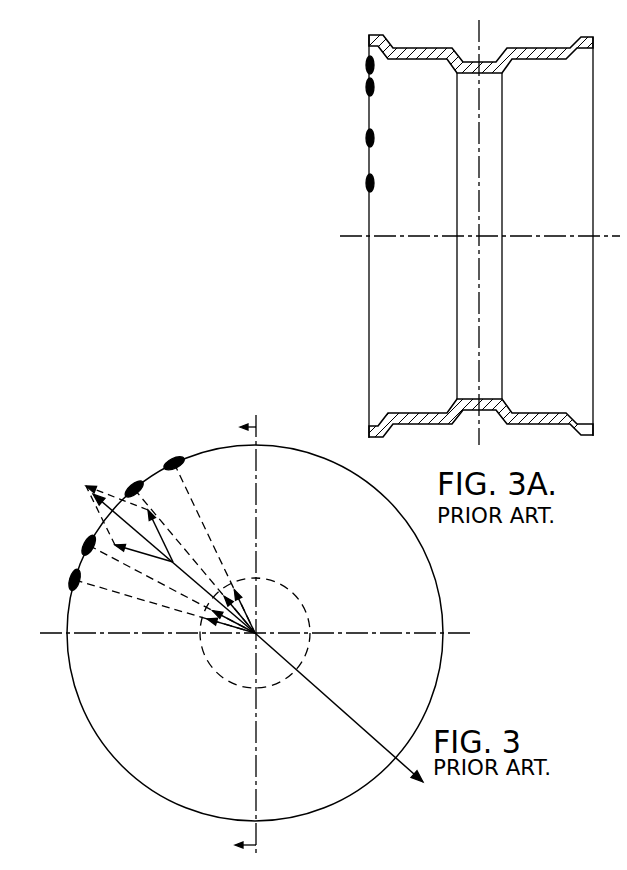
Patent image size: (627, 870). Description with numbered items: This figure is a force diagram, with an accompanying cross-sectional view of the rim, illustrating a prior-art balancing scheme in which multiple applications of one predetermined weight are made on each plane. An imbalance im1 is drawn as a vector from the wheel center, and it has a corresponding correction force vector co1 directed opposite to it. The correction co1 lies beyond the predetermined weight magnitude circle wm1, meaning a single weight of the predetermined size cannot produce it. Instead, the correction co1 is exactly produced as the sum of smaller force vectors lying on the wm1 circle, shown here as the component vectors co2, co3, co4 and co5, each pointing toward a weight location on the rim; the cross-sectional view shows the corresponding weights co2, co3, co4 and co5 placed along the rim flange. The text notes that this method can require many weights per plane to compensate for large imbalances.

In FIG. 3, the correction force vector co1 is at (84, 482).
In FIG. 3A, the correction weight location 2 co2 is at (390, 183).
In FIG. 3, the correction weight location 2 co2 is at (161, 600).
In FIG. 3A, the correction weight location 3 co3 is at (390, 138).
In FIG. 3, the correction weight location 3 co3 is at (167, 583).
In FIG. 3A, the correction weight location 4 co4 is at (390, 89).
In FIG. 3, the correction weight location 4 co4 is at (189, 555).
In FIG. 3A, the correction weight location 5 co5 is at (390, 69).
In FIG. 3, the correction weight location 5 co5 is at (208, 543).
In FIG. 3, the predetermined weight magnitude circle wm1 is at (304, 590).
In FIG. 3, the imbalance im1 is at (430, 785).